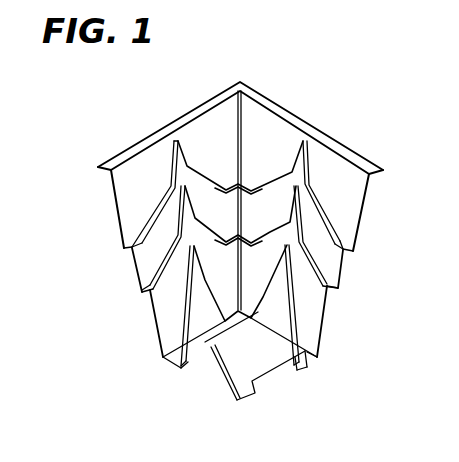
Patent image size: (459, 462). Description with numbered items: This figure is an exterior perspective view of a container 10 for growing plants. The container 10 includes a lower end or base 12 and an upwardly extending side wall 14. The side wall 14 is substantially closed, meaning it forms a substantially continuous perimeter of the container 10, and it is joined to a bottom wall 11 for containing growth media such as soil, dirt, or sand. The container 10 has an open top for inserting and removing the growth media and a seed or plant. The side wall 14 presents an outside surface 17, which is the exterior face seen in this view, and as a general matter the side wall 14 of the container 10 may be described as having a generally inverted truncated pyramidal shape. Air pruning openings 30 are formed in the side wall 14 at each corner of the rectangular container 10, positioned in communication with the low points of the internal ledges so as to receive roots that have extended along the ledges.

The container 10 is at (285, 90).
The bottom wall 11 is at (222, 381).
The base 12 is at (209, 364).
The side wall 14 is at (115, 200).
The outside surface 17 is at (330, 163).
The air pruning openings 30 is at (243, 192).